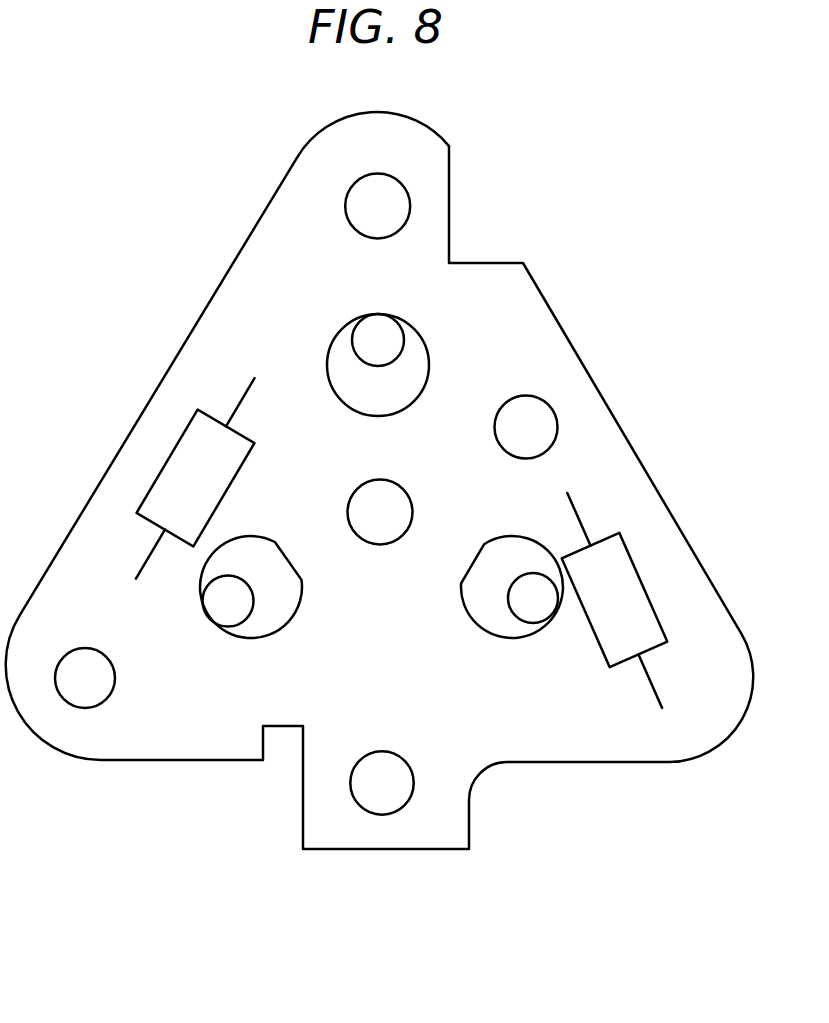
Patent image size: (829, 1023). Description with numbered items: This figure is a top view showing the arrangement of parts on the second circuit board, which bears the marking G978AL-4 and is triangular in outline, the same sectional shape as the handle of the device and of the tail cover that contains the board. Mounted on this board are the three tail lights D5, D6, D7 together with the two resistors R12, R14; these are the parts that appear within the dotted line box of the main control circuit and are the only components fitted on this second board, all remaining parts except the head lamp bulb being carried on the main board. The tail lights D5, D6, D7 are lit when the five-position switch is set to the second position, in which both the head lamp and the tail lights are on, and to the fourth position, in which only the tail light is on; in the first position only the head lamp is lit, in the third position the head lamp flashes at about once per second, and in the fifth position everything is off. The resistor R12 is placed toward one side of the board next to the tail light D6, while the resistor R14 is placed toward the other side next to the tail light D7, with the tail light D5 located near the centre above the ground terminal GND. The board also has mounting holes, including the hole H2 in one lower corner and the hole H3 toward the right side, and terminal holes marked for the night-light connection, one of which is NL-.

The printed circuit board (part number) G978AL-4 is at (380, 480).
The negative night-light terminal hole NL- is at (355, 218).
The tail light D5 is at (403, 365).
The tail light D6 is at (233, 594).
The tail light D7 is at (512, 568).
The mounting hole H3 is at (527, 412).
The mounting hole H2 is at (85, 697).
The ground terminal hole GND is at (380, 493).
The resistor R12 is at (195, 478).
The resistor R14 is at (614, 600).